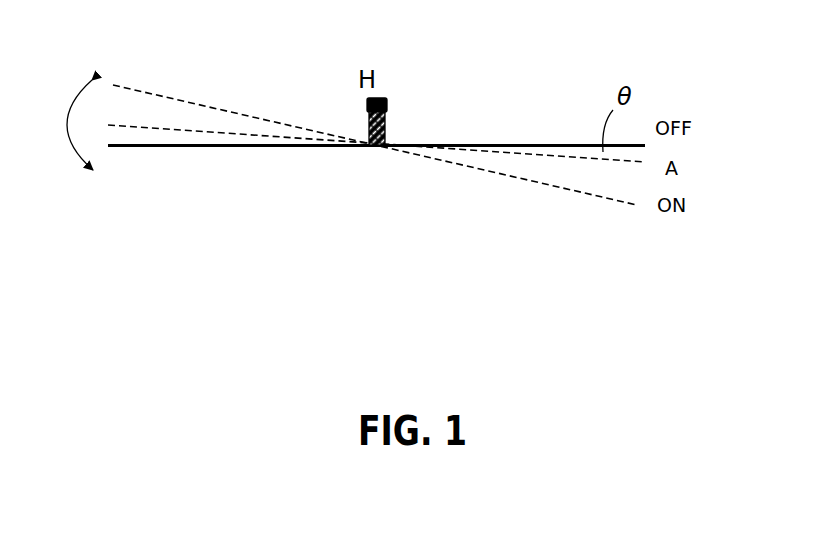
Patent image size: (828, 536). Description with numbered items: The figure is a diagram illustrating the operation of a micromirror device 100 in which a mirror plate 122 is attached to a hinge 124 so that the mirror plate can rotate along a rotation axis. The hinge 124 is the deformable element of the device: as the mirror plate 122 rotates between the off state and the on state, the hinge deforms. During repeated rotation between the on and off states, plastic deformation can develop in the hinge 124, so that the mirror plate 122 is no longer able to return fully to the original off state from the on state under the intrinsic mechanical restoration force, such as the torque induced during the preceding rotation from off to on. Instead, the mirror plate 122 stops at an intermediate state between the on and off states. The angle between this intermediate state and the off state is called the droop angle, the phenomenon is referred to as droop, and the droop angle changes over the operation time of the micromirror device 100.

The micromirror device 100 is at (315, 73).
The mirror plate 122 is at (293, 147).
The hinge 124 is at (388, 105).